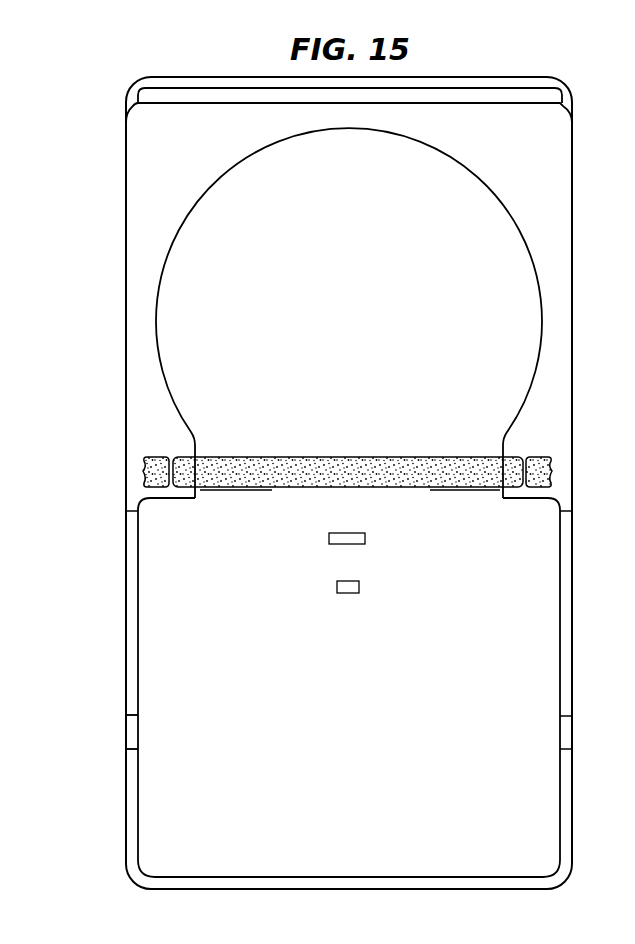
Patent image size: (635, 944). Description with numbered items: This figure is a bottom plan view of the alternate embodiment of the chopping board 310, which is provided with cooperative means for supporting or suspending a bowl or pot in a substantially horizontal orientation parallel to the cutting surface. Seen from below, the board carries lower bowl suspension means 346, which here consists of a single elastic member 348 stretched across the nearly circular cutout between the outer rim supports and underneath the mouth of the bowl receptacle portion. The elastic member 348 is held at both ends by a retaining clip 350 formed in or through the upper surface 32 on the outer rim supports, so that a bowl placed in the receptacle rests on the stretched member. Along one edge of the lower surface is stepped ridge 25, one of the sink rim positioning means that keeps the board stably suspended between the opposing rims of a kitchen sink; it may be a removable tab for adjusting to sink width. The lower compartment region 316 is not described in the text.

The chopping board 310 is at (106, 210).
The lower bowl suspension means 346 is at (496, 436).
The elastic member 348 is at (396, 462).
The retaining clip 350 is at (530, 452).
The upper surface 32 is at (362, 538).
The lower compartment 316 is at (535, 647).
The stepped ridge 25 is at (129, 732).